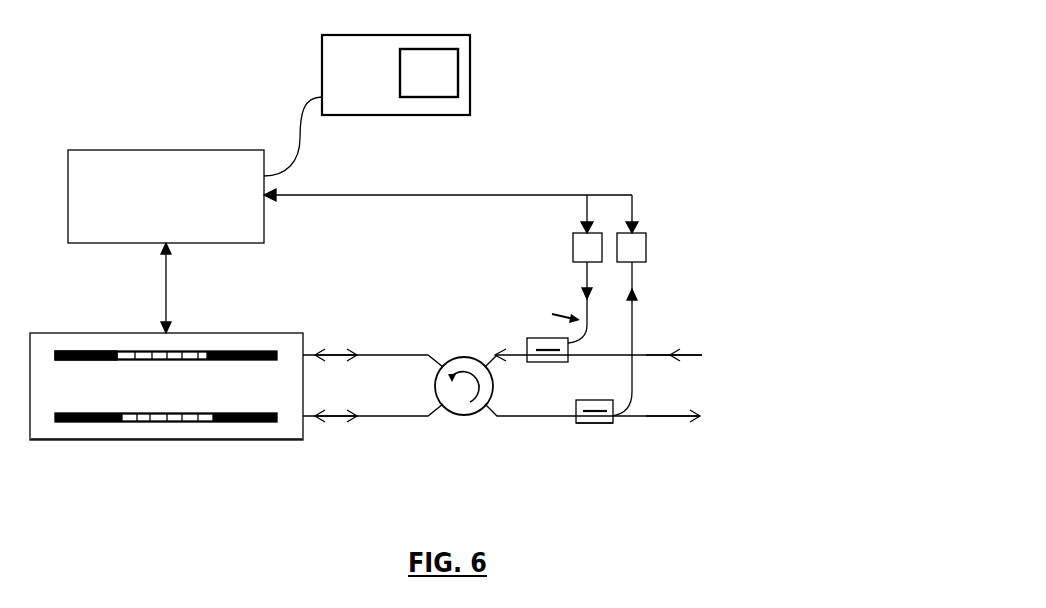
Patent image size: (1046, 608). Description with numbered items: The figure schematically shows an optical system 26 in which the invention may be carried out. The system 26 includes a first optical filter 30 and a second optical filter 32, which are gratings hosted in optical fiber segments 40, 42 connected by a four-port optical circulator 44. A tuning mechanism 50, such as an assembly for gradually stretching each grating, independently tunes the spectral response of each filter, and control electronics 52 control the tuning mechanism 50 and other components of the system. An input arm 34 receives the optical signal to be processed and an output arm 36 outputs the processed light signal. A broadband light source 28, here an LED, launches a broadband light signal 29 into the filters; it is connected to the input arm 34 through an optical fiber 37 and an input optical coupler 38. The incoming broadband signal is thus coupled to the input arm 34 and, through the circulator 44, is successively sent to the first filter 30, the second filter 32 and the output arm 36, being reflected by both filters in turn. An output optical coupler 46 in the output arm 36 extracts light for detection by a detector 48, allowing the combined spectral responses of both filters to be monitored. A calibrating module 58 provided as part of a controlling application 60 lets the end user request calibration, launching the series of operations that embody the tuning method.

The optical system 26 is at (732, 207).
The broadband light source 28 is at (573, 244).
The broadband light signal 29 is at (552, 313).
The first optical filter 30 is at (240, 345).
The second optical filter 32 is at (243, 422).
The input arm 34 is at (645, 353).
The output arm 36 is at (646, 418).
The optical fiber 37 is at (565, 340).
The input optical coupler 38 is at (588, 398).
The optical fiber segment 40 is at (298, 350).
The optical fiber segment 42 is at (299, 420).
The 4-ports optical circulator 44 is at (468, 417).
The output optical coupler 46 is at (588, 424).
The detector 48 is at (646, 249).
The tuning mechanism 50 is at (91, 344).
The control electronics 52 is at (198, 160).
The calibrating module 58 is at (437, 79).
The controlling application 60 is at (372, 50).